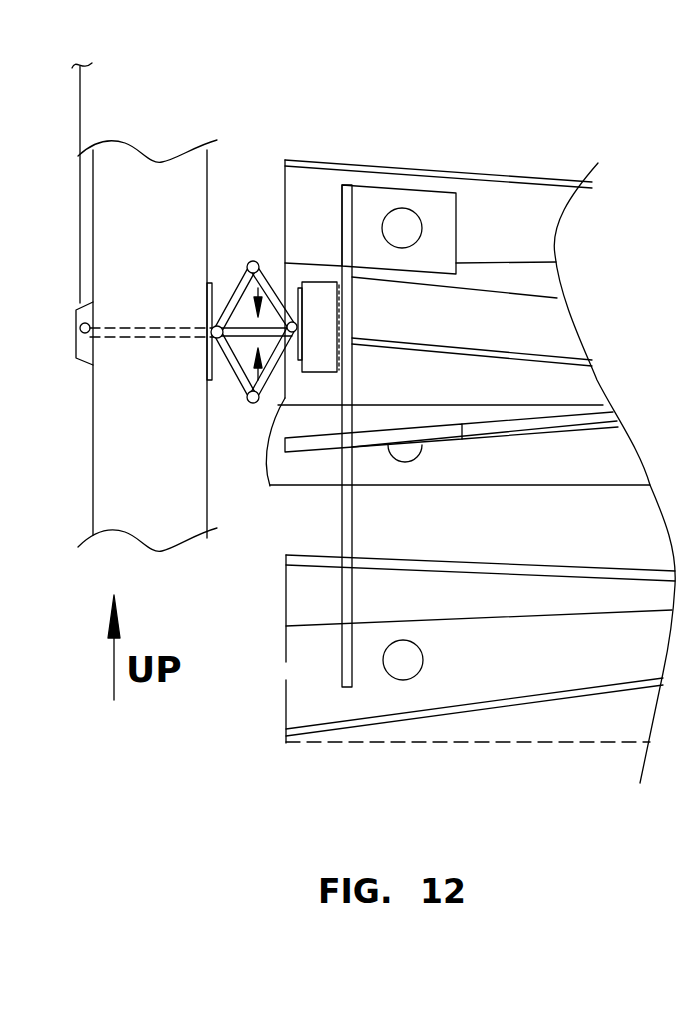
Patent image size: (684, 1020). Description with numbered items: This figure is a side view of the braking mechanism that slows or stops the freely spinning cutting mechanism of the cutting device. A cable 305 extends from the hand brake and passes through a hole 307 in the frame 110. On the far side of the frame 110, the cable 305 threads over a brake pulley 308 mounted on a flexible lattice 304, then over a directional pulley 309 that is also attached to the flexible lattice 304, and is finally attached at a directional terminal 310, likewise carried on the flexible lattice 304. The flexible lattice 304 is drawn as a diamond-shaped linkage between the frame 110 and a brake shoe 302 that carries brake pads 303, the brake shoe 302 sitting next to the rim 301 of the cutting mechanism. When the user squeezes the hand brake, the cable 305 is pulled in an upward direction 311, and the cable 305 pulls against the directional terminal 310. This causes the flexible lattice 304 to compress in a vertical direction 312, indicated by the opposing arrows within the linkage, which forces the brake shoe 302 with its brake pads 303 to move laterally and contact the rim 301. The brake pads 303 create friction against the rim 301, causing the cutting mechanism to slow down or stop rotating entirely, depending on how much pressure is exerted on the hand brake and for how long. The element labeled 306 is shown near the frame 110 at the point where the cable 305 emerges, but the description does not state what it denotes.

The frame 110 is at (100, 455).
The rim 301 is at (353, 542).
The brake shoe 302 is at (325, 293).
The brake pads 303 is at (342, 317).
The flexible lattice 304 is at (241, 272).
The cable 305 is at (82, 123).
The pivot bracket 306 is at (85, 343).
The hole 307 is at (140, 328).
The brake pulley 308 is at (301, 322).
The directional pulley 309 is at (258, 261).
The directional terminal 310 is at (255, 403).
The upward direction 311 is at (168, 74).
The vertical direction 312 is at (243, 381).